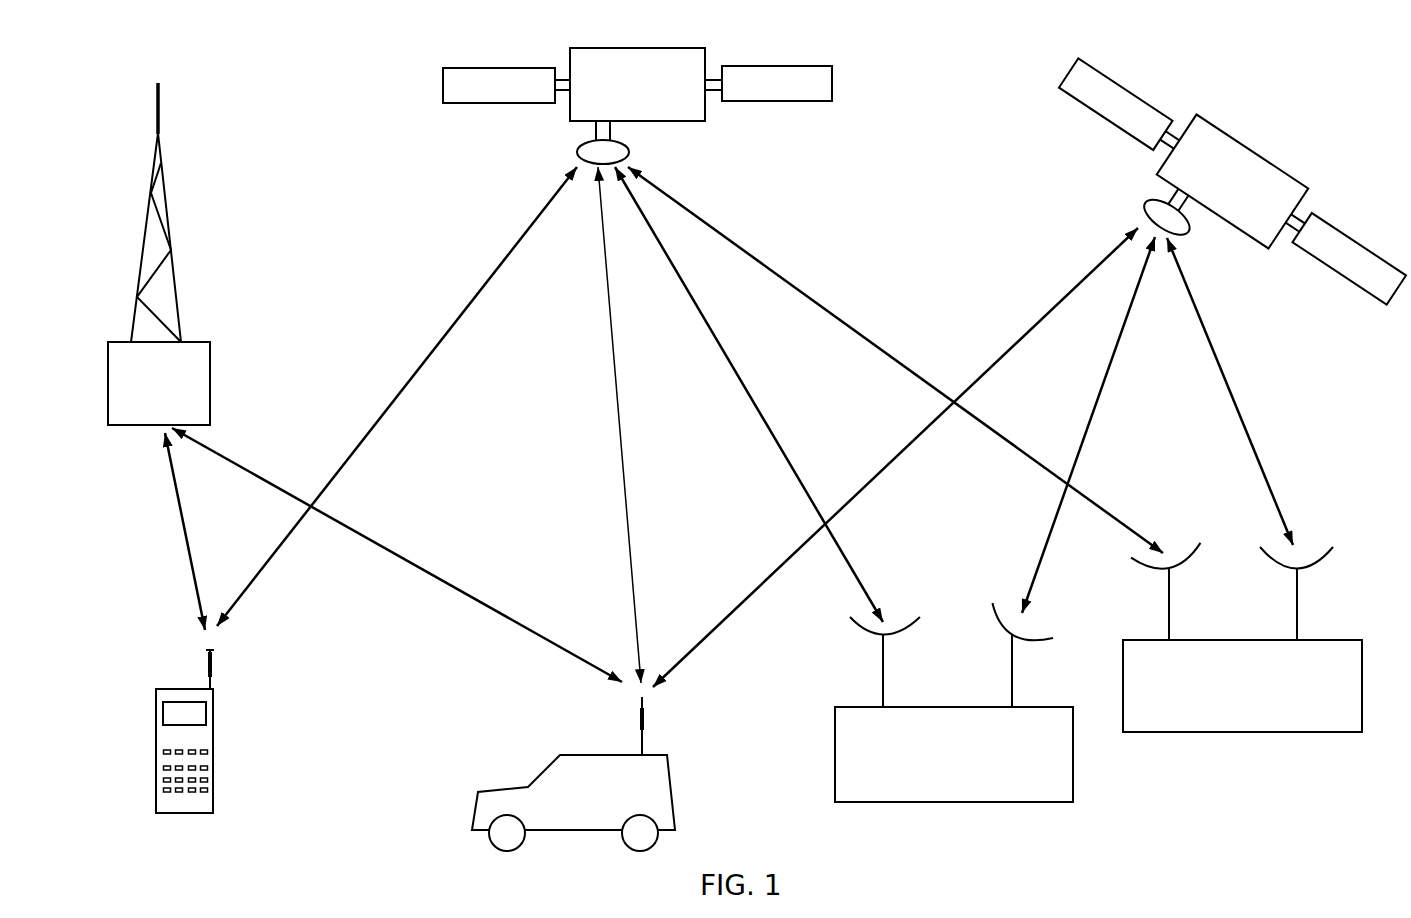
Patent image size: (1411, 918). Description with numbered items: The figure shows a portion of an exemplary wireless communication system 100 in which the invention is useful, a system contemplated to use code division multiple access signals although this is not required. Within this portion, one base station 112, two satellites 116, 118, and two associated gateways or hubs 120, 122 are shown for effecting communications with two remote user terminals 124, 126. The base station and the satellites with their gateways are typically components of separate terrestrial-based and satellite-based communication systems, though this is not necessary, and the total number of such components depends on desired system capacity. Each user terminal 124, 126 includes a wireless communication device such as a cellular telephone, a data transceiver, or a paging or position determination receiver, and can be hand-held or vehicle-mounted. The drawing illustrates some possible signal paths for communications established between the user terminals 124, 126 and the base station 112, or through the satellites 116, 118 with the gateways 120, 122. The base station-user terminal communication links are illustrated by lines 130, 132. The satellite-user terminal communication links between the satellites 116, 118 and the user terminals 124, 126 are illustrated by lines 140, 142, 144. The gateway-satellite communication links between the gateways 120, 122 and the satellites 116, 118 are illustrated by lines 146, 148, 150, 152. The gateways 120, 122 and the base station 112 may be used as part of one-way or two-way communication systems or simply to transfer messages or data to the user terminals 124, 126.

The communication system 100 is at (248, 105).
The base station 112 is at (197, 341).
The satellite 116 is at (827, 45).
The satellite 118 is at (1335, 224).
The gateway 120 is at (1050, 802).
The gateway 122 is at (1327, 733).
The user terminal 124 is at (190, 813).
The user terminal 126 is at (660, 753).
The base station-user terminal communication link 130 is at (172, 498).
The base station-user terminal communication link 132 is at (222, 455).
The satellite-user terminal communication link 140 is at (447, 347).
The satellite-user terminal communication link 142 is at (618, 407).
The satellite-user terminal communication link 144 is at (757, 583).
The gateway-satellite communication link 146 is at (758, 413).
The gateway-satellite communication link 148 is at (842, 318).
The gateway-satellite communication link 150 is at (1102, 390).
The gateway-satellite communication link 152 is at (1218, 350).